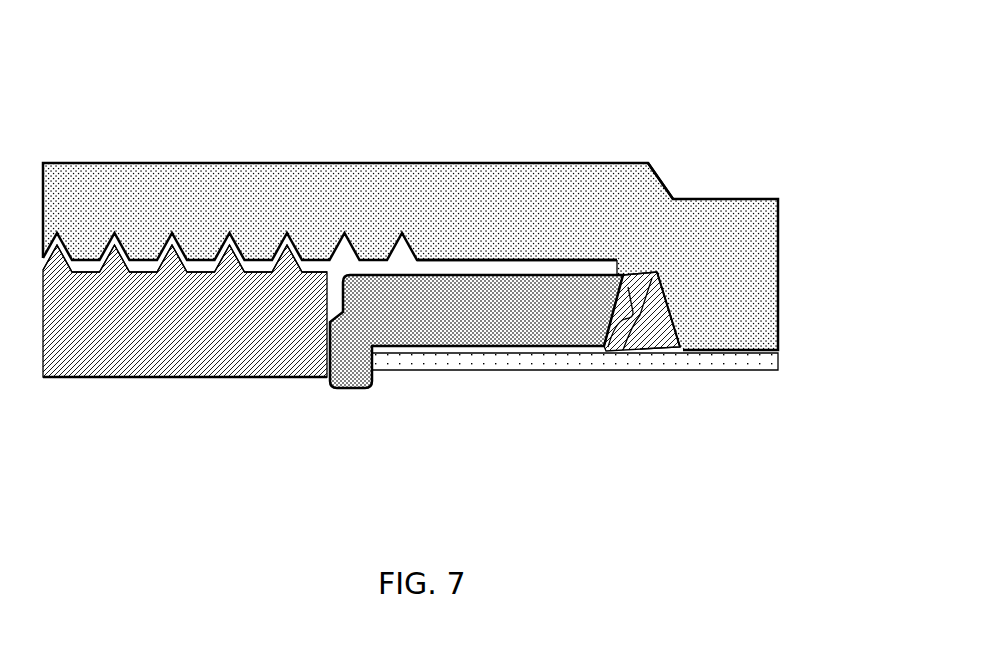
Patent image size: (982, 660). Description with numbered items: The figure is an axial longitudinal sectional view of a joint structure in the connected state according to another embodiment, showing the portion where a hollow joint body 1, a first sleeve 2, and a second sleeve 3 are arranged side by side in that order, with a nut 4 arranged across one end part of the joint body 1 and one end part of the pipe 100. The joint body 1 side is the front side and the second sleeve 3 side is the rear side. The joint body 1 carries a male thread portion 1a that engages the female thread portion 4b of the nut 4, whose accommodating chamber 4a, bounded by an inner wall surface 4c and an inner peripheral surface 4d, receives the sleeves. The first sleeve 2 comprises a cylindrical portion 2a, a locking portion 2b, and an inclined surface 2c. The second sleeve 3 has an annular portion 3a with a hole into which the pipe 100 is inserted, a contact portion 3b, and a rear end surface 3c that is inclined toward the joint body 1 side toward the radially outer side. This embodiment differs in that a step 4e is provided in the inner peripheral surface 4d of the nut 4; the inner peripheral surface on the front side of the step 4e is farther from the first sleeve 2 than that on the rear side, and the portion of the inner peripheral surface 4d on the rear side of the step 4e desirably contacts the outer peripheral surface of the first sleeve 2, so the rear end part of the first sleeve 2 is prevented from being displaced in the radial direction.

The joint body 1 is at (185, 296).
The male thread portion 1a is at (158, 242).
The first sleeve 2 is at (555, 130).
The cylindrical portion 2a is at (467, 283).
The locking portion 2b is at (342, 317).
The inclined surface 2c is at (637, 272).
The second sleeve 3 is at (720, 455).
The annular portion 3a is at (623, 352).
The contact portion 3b is at (612, 335).
The rear end surface 3c is at (676, 317).
The nut 4 is at (250, 190).
The accommodating chamber 4a is at (645, 275).
The female thread portion 4b is at (237, 258).
The inner wall surface 4c is at (652, 275).
The inner peripheral surface 4d is at (521, 263).
The step 4e is at (620, 263).
The pipe 100 is at (740, 360).